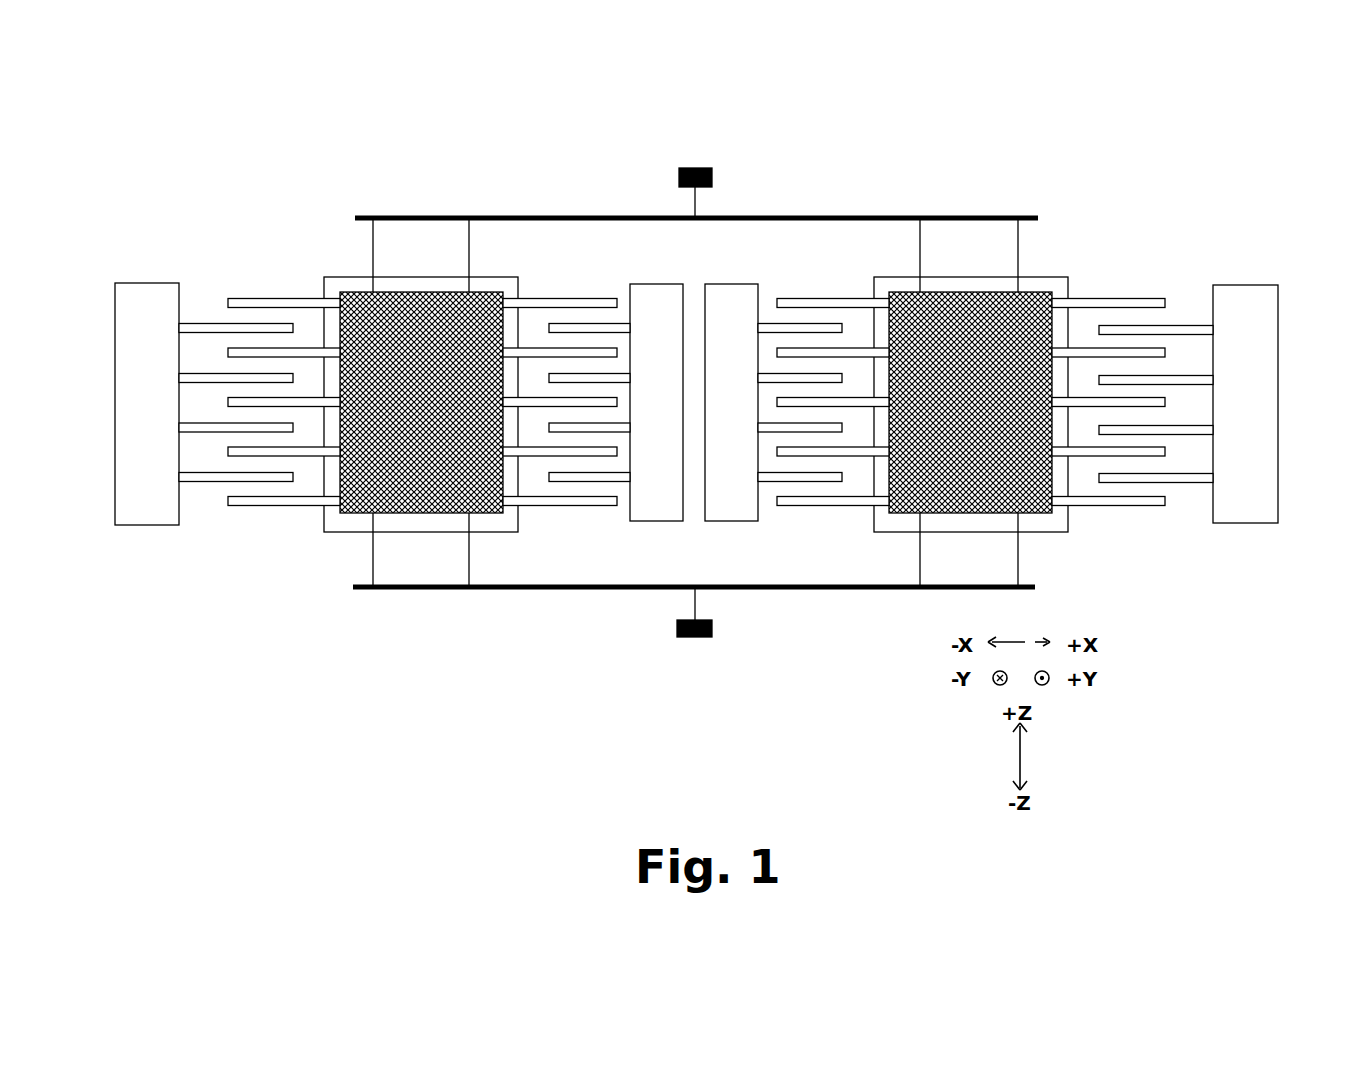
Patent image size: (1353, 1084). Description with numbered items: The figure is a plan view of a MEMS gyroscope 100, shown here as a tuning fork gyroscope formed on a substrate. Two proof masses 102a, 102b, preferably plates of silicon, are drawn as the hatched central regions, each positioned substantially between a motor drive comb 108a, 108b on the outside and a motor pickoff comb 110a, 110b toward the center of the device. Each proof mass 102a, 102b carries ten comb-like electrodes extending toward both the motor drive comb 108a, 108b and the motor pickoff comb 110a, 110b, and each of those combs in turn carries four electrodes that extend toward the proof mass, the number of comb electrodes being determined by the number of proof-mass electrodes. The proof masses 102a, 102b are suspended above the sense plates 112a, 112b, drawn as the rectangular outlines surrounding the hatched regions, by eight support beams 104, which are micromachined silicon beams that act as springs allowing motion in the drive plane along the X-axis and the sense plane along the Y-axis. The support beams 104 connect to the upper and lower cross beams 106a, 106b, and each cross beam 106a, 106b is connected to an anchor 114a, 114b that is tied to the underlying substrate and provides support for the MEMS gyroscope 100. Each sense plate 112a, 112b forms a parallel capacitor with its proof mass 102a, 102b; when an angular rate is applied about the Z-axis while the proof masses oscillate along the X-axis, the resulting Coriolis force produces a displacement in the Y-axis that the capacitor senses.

The MEMS gyroscope 100 is at (1085, 162).
The proof mass 102a is at (358, 302).
The proof mass 102b is at (1015, 313).
The support beams 104 is at (469, 243).
The cross beam 106a is at (820, 218).
The cross beam 106b is at (848, 590).
The motor drive comb 108a is at (150, 283).
The motor drive comb 108b is at (1243, 285).
The motor pickoff comb 110a is at (648, 284).
The motor pickoff comb 110b is at (740, 284).
The sense plate 112a is at (331, 515).
The sense plate 112b is at (1058, 514).
The anchor 114a is at (712, 178).
The anchor 114b is at (675, 630).